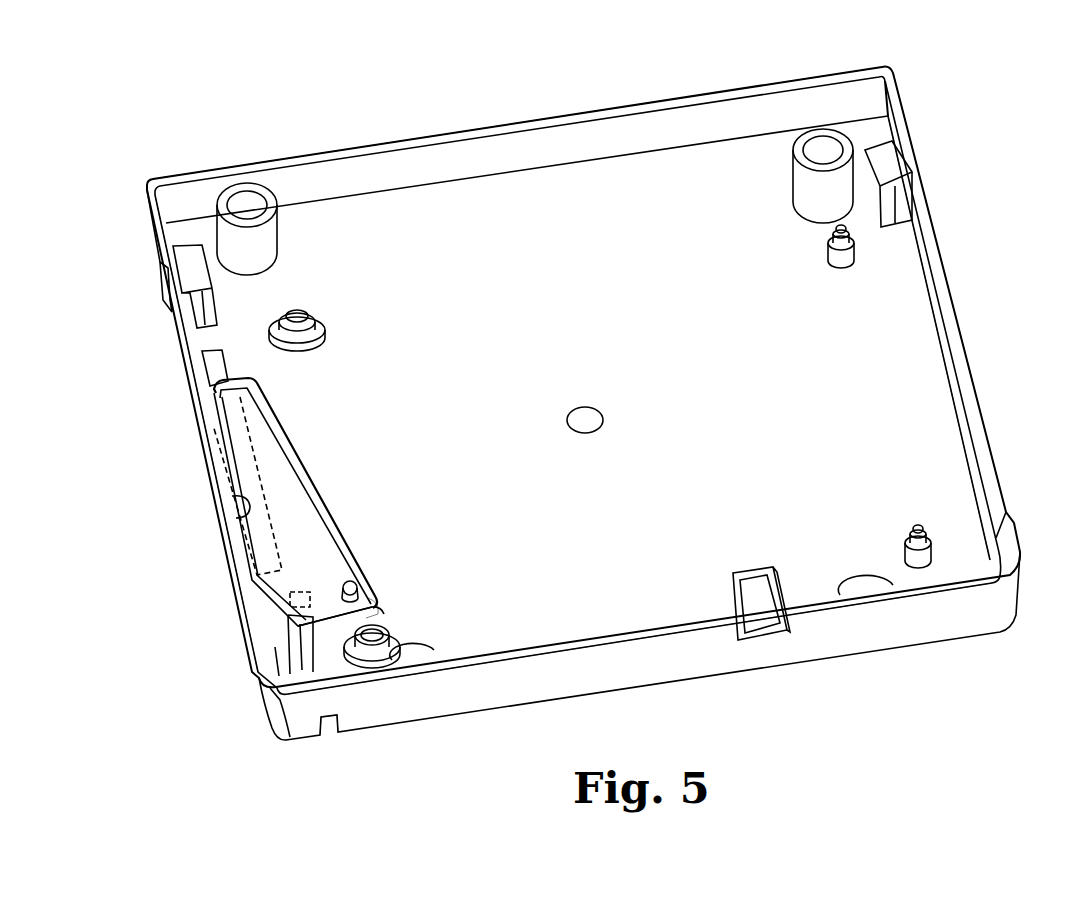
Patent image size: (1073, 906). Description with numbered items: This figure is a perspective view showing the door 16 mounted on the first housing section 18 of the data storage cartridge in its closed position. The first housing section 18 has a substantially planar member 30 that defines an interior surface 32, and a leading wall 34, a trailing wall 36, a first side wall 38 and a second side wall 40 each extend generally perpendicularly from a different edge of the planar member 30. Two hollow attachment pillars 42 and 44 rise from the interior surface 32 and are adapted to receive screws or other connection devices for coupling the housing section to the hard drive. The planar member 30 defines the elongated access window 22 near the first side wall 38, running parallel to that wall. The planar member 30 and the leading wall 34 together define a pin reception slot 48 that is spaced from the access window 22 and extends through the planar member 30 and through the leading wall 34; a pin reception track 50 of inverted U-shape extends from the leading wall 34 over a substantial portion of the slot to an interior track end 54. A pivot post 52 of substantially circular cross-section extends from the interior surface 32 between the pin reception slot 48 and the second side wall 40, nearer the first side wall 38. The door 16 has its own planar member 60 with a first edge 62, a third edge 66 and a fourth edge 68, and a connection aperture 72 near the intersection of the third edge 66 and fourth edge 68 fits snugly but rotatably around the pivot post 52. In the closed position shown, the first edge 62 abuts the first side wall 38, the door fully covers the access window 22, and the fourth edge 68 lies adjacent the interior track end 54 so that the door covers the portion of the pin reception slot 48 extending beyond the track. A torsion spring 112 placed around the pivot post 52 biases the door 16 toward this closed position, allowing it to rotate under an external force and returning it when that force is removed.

The door 16 is at (302, 502).
The first housing section 18 is at (935, 117).
The access window 22 is at (195, 437).
The planar member 30 is at (917, 378).
The interior surface 32 is at (898, 293).
The leading wall 34 is at (690, 664).
The trailing wall 36 is at (545, 135).
The first side wall 38 is at (180, 342).
The second side wall 40 is at (957, 307).
The attachment pillar 42 is at (470, 643).
The attachment pillar 44 is at (300, 310).
The pin reception slot 48 is at (243, 620).
The pin reception track 50 is at (270, 666).
The pivot post 52 is at (360, 592).
The interior track end 54 is at (280, 642).
The planar member 60 is at (304, 488).
The first edge 62 is at (240, 500).
The third edge 66 is at (288, 436).
The fourth edge 68 is at (325, 622).
The connection aperture 72 is at (384, 608).
The torsion spring 112 is at (370, 598).